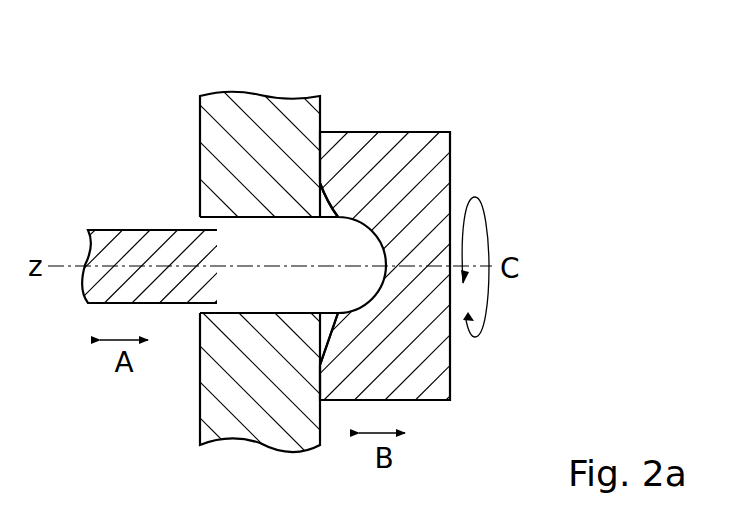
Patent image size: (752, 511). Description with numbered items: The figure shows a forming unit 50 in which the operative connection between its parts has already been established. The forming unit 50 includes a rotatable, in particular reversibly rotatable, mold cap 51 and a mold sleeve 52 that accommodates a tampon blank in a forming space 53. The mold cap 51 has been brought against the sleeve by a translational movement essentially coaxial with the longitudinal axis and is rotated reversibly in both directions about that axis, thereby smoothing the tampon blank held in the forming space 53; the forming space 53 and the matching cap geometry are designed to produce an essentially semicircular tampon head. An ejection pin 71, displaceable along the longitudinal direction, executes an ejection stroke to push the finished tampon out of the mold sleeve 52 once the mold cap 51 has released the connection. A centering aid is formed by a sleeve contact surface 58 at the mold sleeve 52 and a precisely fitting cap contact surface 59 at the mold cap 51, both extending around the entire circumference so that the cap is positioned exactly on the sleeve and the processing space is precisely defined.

The forming unit 50 is at (397, 108).
The mold cap 51 is at (423, 168).
The mold sleeve 52 is at (245, 128).
The forming space 53 is at (291, 257).
The sleeve contact surface 58 is at (330, 338).
The cap contact surface 59 is at (324, 198).
The ejection pin 71 is at (120, 250).